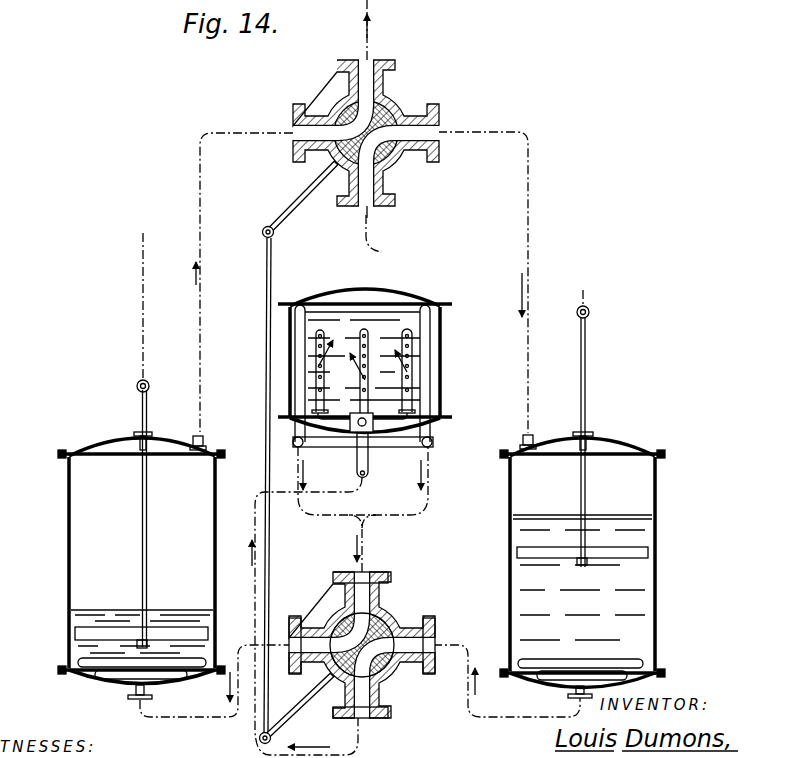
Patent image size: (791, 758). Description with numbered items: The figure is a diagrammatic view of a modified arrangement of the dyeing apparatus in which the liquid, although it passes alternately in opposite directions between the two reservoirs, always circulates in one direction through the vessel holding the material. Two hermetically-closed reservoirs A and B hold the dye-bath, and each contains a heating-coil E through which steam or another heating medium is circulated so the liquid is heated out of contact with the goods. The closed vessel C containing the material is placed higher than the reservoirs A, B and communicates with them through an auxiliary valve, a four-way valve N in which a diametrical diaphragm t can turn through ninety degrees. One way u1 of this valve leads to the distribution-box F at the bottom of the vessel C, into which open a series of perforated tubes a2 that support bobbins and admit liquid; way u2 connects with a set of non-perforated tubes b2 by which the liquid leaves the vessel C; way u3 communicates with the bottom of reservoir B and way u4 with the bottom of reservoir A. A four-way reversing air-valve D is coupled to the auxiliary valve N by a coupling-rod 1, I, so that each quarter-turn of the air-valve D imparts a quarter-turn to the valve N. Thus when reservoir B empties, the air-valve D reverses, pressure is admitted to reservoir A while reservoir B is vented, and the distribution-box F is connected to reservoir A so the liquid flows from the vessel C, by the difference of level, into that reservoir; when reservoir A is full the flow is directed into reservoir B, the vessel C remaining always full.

The four-way reversing air-valve D is at (397, 104).
The four-way auxiliary valve N is at (377, 615).
The diametrical diaphragm t is at (388, 630).
The coupling-rod 1 is at (266, 241).
The coupling-rod I is at (262, 732).
The reservoir A is at (141, 539).
The reservoir B is at (590, 497).
The heating-coil E is at (115, 676).
The distribution-box F is at (370, 414).
The vessel C is at (368, 376).
The perforated tubes a2 is at (430, 395).
The non-perforated tubes b2 is at (405, 374).
The way of auxiliary valve u1 is at (370, 718).
The way of auxiliary valve u2 is at (365, 575).
The way of auxiliary valve u3 is at (433, 645).
The way of auxiliary valve u4 is at (300, 628).